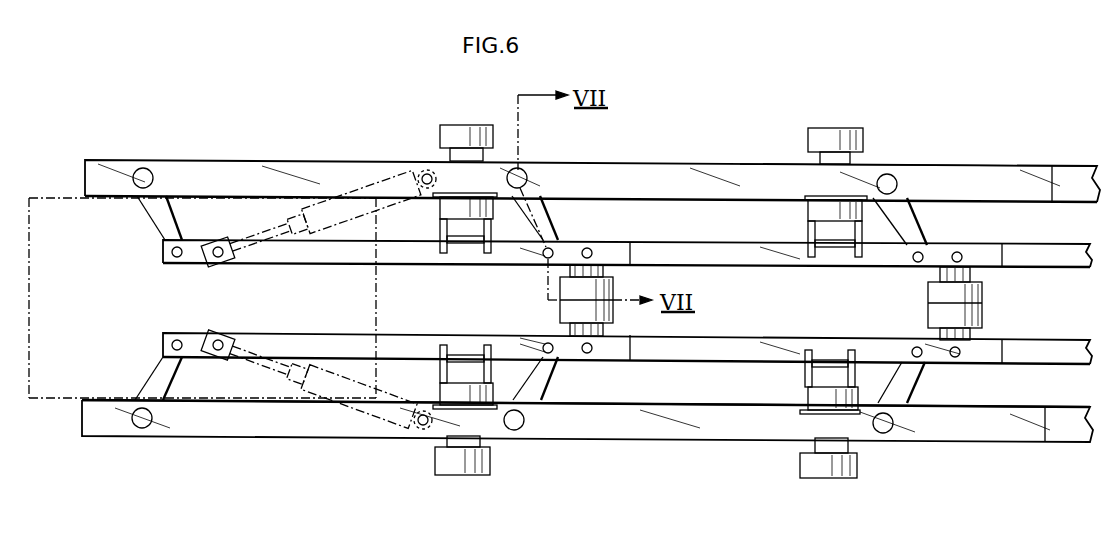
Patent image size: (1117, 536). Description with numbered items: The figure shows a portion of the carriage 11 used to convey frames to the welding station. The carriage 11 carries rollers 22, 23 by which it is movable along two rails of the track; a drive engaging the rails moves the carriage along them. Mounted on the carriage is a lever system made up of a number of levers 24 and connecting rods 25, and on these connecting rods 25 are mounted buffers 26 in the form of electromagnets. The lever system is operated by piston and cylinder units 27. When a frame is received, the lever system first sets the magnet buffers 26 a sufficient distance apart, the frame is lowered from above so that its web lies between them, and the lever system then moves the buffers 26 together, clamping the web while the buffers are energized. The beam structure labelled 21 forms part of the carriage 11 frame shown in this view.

The carriage 11 is at (972, 163).
The longitudinal beam 21 is at (930, 173).
The roller 22 is at (441, 138).
The roller 23 is at (460, 204).
The lever 24 is at (545, 218).
The connecting rod 25 is at (338, 264).
The buffer 26 is at (560, 290).
The piston and cylinder unit 27 is at (390, 206).